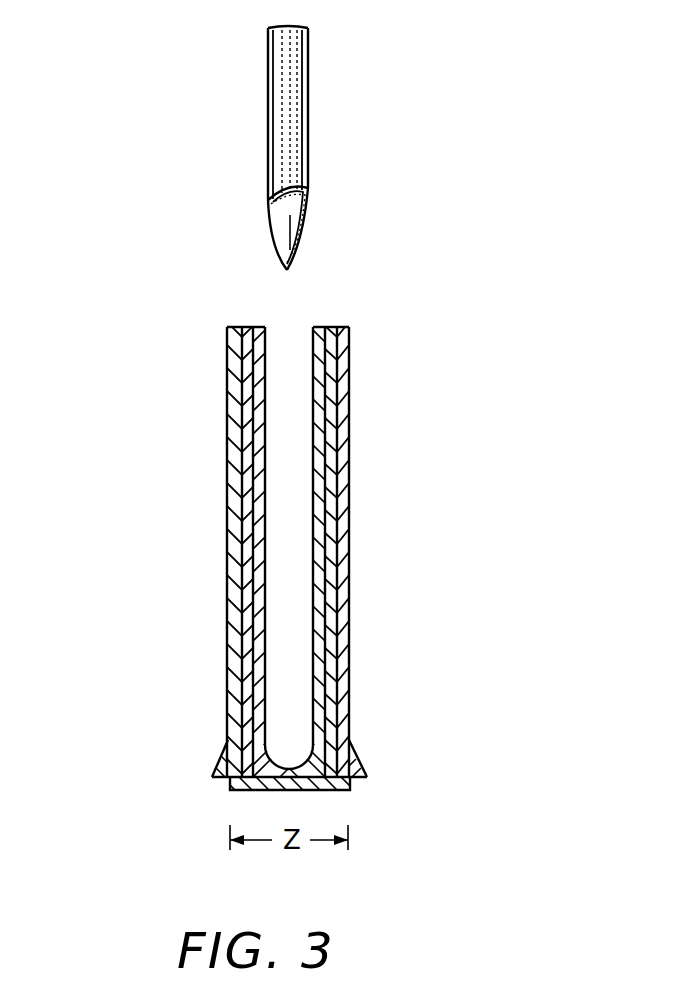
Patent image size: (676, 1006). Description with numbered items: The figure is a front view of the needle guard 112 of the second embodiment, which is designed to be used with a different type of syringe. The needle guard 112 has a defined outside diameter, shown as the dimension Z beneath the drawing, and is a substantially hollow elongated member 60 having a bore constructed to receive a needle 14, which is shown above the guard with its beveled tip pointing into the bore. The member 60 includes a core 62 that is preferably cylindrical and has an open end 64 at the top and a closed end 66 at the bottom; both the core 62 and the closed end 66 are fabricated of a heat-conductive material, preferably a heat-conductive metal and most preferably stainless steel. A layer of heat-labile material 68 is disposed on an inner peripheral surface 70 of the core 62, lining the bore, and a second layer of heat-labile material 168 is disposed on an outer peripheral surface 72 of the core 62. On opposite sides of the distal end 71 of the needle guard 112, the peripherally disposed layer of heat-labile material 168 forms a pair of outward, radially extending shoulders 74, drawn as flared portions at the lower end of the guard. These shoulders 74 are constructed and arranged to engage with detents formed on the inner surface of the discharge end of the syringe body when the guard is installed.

The needle 14 is at (308, 120).
The hollow elongated member 60 is at (218, 435).
The core 62 is at (337, 380).
The open end 64 is at (280, 327).
The closed end 66 is at (229, 790).
The layer of heat-labile material 68 is at (300, 327).
The inner peripheral surface 70 is at (325, 462).
The distal end 71 is at (374, 751).
The outer peripheral surface 72 is at (347, 643).
The shoulders 74 is at (217, 767).
The needle guard 112 is at (370, 596).
The second layer of heat-labile material 168 is at (227, 597).